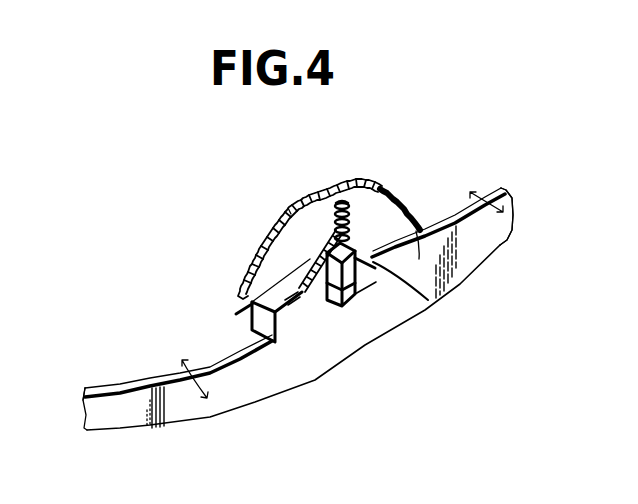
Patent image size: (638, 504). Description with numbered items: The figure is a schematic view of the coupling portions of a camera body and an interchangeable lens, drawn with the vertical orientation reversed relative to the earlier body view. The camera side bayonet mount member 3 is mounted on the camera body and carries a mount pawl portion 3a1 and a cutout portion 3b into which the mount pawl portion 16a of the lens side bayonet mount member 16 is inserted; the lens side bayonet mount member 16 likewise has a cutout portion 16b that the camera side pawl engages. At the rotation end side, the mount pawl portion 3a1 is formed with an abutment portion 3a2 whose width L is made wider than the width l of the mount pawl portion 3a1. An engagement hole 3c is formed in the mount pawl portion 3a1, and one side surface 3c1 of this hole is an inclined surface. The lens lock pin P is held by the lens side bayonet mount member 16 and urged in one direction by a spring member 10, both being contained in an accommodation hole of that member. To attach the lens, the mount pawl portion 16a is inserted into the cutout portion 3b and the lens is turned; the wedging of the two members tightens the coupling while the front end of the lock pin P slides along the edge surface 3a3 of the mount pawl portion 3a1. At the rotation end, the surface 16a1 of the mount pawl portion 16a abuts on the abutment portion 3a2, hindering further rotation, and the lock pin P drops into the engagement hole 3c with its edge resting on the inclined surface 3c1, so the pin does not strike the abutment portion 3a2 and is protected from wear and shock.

The camera side bayonet mount member 3 is at (298, 372).
The mount pawl portion 3a1 is at (421, 228).
The abutment portion 3a2 is at (303, 278).
The edge surface 3a3 is at (502, 205).
The cutout portion 3b is at (240, 376).
The engagement hole 3c is at (345, 308).
The inclined surface 3c1 is at (430, 300).
The spring member 10 is at (358, 194).
The lens side bayonet mount member 16 is at (313, 192).
The mount pawl portion 16a is at (396, 210).
The surface 16a1 is at (300, 274).
The cutout portion 16b is at (238, 288).
The lens lock pin P is at (288, 208).
The width of the abutment portion L is at (252, 308).
The width of the mount pawl portion l is at (196, 372).